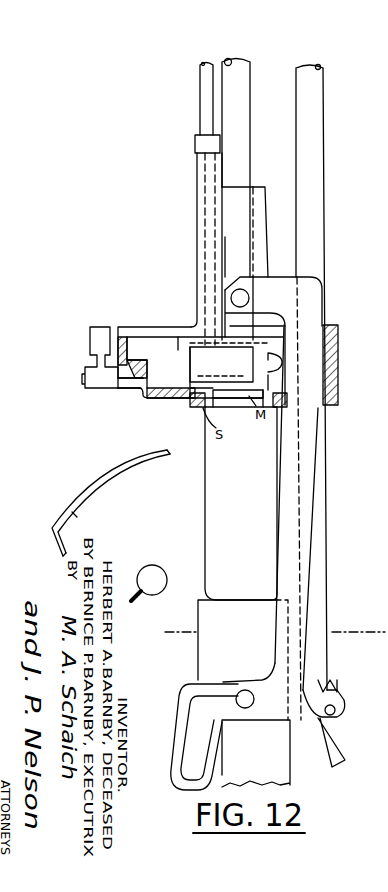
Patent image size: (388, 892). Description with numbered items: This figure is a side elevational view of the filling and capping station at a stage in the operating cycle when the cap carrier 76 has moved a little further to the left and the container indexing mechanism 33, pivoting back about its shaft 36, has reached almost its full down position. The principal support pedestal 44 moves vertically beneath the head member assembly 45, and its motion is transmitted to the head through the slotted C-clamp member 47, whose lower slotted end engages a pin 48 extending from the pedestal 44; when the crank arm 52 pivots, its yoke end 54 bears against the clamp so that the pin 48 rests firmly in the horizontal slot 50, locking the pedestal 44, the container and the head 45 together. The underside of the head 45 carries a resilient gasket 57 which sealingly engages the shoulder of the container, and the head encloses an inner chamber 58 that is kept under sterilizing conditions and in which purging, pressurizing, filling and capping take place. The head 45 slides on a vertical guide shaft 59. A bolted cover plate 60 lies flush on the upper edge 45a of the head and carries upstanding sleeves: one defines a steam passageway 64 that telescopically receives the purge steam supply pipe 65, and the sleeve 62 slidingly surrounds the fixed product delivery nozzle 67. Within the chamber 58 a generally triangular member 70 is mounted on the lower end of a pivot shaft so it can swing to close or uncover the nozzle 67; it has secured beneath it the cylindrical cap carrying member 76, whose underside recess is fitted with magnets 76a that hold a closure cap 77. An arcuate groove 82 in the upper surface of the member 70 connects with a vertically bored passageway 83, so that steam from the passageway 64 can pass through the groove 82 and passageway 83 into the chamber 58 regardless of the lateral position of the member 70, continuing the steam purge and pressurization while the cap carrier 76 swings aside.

The container indexing mechanism 33 is at (80, 520).
The shaft 36 is at (149, 583).
The principal support pedestal 44 is at (258, 635).
The head member assembly 45 is at (125, 400).
The upper edge of the head 45a is at (89, 372).
The slotted C-clamp member 47 is at (310, 418).
The pin 48 is at (246, 709).
The horizontal slot segment 50 is at (220, 689).
The crank arm 52 is at (338, 744).
The yoke end 54 is at (338, 690).
The resilient gasket 57 is at (195, 406).
The inner chamber 58 is at (141, 404).
The vertical guide shaft 59 is at (318, 122).
The cover plate 60 is at (133, 332).
The sleeve 62 is at (262, 188).
The steam passageway 64 is at (202, 250).
The purge steam supply pipe 65 is at (203, 101).
The product delivery nozzle 67 is at (247, 103).
The triangular shaped member 70 is at (178, 332).
The cap carrying member 76 is at (233, 369).
The magnets 76a is at (241, 401).
The closure cap 77 is at (163, 370).
The arcuate groove 82 is at (269, 362).
The vertically bored passageway 83 is at (272, 382).